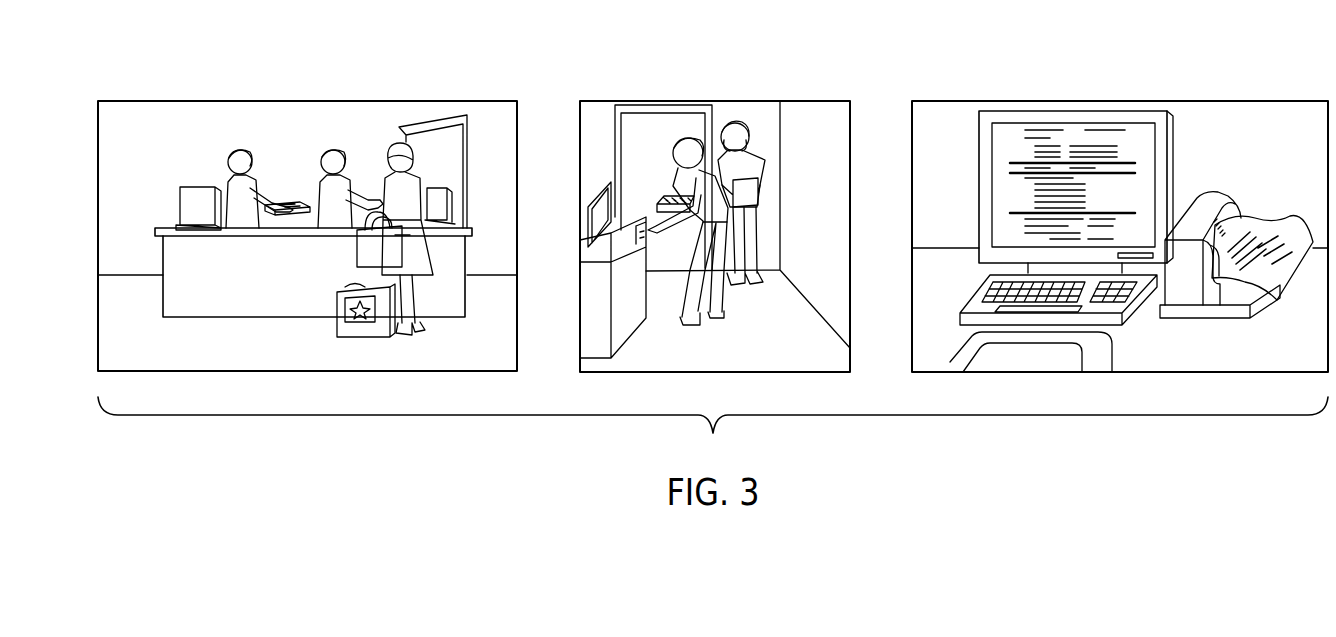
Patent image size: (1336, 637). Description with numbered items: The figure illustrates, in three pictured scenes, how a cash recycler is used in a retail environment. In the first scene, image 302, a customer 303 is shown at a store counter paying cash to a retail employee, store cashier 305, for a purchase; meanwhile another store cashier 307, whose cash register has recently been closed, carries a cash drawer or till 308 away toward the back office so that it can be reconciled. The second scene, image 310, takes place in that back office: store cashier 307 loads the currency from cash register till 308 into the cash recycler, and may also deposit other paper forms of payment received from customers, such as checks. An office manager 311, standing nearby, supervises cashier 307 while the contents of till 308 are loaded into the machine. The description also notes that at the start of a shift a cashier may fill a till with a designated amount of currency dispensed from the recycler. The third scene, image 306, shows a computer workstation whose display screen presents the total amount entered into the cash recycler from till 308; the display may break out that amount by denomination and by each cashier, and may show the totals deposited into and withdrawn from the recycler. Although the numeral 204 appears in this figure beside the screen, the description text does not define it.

The image 302 is at (132, 120).
The store cashier 307 is at (235, 147).
The store cashier 305 is at (329, 150).
The cash register till 308 is at (297, 217).
The customer 303 is at (418, 258).
The image 310 is at (805, 120).
The office manager 311 is at (750, 210).
The image 306 is at (1263, 115).
The display screen 204 is at (1015, 138).